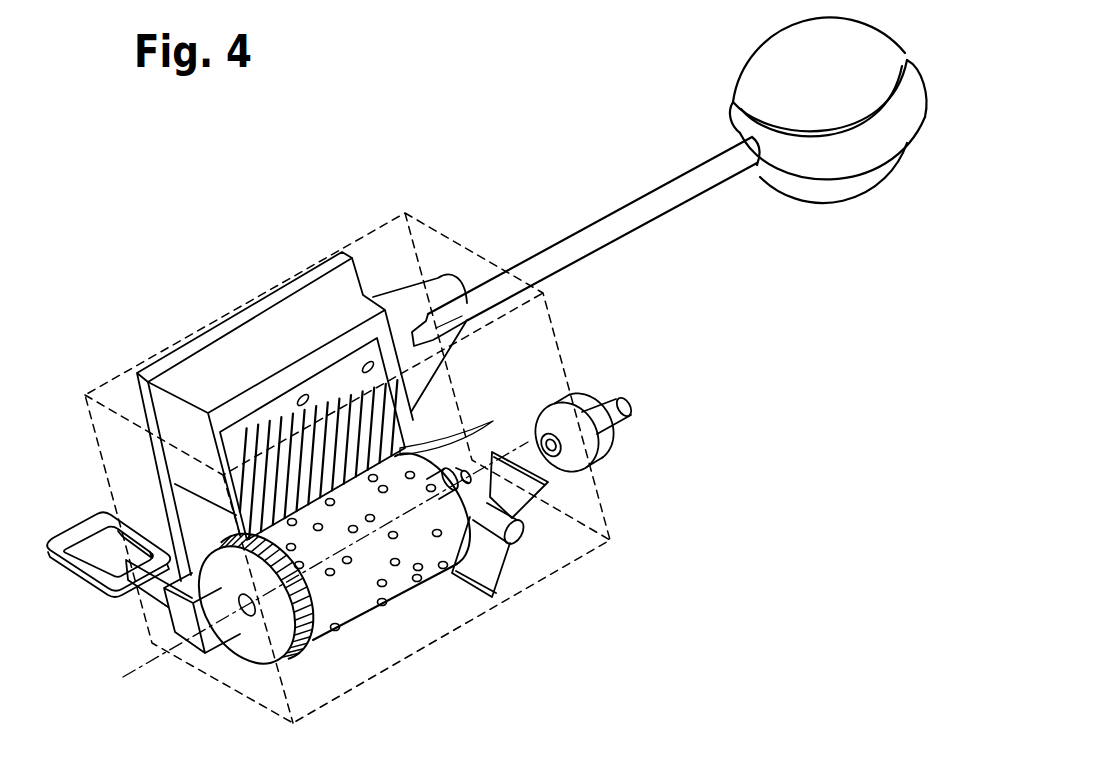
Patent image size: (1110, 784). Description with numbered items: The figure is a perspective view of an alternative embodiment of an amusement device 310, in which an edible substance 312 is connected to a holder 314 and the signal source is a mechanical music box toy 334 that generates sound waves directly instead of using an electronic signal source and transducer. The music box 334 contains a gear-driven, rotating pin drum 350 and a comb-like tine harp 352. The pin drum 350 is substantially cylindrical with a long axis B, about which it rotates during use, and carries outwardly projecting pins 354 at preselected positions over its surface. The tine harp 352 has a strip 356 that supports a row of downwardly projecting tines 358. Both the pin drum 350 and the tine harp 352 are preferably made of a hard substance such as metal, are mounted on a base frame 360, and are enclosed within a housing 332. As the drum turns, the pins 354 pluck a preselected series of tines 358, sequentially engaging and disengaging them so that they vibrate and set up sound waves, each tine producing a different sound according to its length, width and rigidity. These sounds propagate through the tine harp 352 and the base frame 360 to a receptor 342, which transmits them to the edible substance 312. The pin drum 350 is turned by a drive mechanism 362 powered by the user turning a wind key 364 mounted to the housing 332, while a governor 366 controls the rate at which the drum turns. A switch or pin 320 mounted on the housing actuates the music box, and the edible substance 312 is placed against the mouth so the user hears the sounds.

The device 310 is at (836, 570).
The edible substance 312 is at (608, 104).
The holder 314 is at (209, 200).
The switch or pin 320 is at (623, 420).
The housing 332 is at (437, 231).
The mechanical music box toy 334 is at (175, 282).
The receptor 342 is at (396, 280).
The pin drum 350 is at (347, 609).
The tine harp 352 is at (271, 396).
The pins 354 is at (418, 585).
The strip 356 is at (342, 378).
The tines 358 is at (490, 423).
The base frame 360 is at (137, 387).
The drive mechanism 362 is at (177, 618).
The wind key 364 is at (62, 530).
The governor 366 is at (507, 567).
The long axis B is at (130, 676).